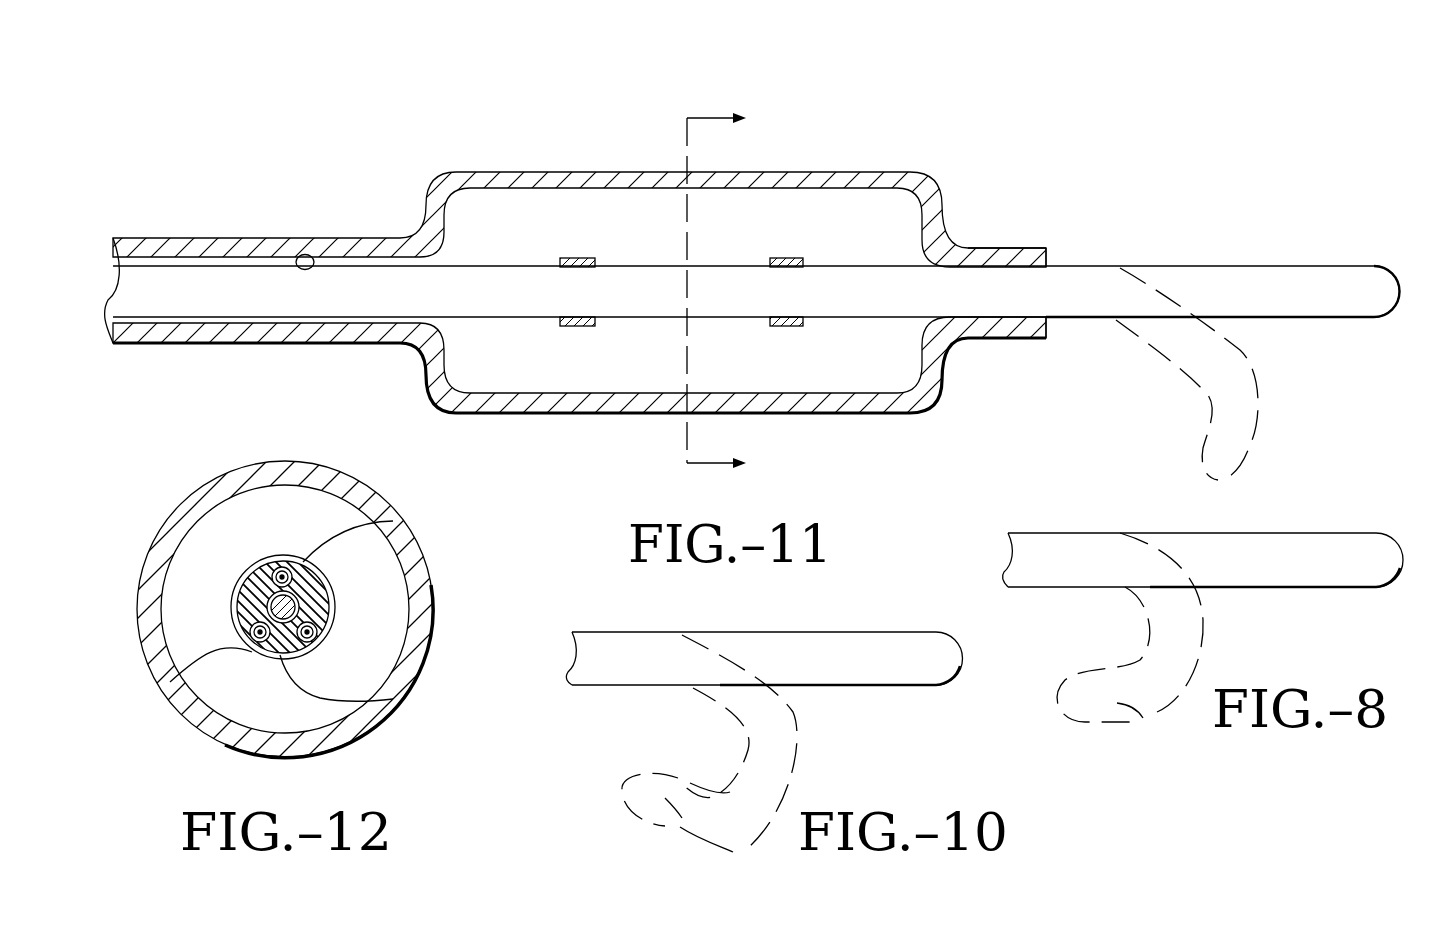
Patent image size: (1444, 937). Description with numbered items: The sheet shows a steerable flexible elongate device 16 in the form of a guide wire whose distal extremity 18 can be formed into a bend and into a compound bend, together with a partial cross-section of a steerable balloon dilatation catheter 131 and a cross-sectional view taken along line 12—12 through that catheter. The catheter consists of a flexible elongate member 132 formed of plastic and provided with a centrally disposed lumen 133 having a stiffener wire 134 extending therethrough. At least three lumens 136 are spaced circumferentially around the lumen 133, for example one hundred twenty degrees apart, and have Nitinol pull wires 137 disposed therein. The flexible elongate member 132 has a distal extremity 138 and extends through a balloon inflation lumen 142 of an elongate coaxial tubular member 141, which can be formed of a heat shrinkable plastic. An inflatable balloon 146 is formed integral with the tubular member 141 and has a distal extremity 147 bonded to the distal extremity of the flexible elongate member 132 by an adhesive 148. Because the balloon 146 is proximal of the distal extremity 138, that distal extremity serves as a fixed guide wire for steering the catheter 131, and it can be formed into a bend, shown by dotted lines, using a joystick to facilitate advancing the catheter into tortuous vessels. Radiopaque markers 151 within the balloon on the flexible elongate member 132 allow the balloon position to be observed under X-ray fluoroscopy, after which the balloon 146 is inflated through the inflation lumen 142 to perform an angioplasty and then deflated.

In FIG. 11, the section line 12— 12 is at (735, 296).
In FIG. 10, the steerable flexible elongate device 16 is at (615, 615).
In FIG. 8, the steerable flexible elongate device 16 is at (1093, 518).
In FIG. 10, the distal extremity 18 is at (868, 640).
In FIG. 8, the distal extremity 18 is at (1313, 548).
In FIG. 11, the balloon dilatation catheter 131 is at (752, 261).
In FIG. 12, the balloon dilatation catheter 131 is at (295, 562).
In FIG. 11, the flexible elongate member 132 is at (508, 264).
In FIG. 12, the flexible elongate member 132 is at (317, 593).
In FIG. 12, the centrally disposed lumen 133 is at (213, 731).
In FIG. 12, the stiffener wire 134 is at (268, 611).
In FIG. 12, the lumens 136 is at (393, 521).
In FIG. 12, the Nitinol pull wires 137 is at (278, 566).
In FIG. 11, the distal extremity 138 is at (1345, 301).
In FIG. 11, the elongate coaxial tubular member 141 is at (178, 240).
In FIG. 11, the balloon inflation lumen 142 is at (307, 256).
In FIG. 11, the inflatable balloon 146 is at (825, 172).
In FIG. 11, the distal extremity of balloon 147 is at (988, 248).
In FIG. 11, the adhesive 148 is at (1025, 250).
In FIG. 11, the radiopaque markers 151 is at (575, 326).
In FIG. 12, the radiopaque markers 151 is at (327, 577).